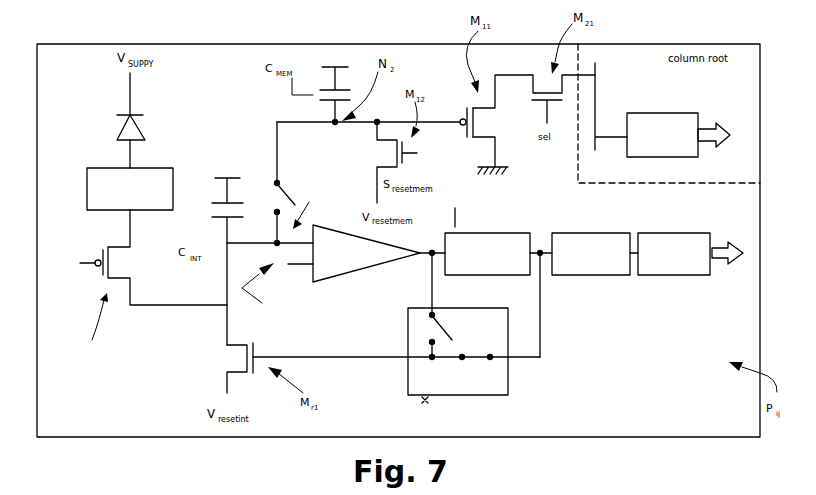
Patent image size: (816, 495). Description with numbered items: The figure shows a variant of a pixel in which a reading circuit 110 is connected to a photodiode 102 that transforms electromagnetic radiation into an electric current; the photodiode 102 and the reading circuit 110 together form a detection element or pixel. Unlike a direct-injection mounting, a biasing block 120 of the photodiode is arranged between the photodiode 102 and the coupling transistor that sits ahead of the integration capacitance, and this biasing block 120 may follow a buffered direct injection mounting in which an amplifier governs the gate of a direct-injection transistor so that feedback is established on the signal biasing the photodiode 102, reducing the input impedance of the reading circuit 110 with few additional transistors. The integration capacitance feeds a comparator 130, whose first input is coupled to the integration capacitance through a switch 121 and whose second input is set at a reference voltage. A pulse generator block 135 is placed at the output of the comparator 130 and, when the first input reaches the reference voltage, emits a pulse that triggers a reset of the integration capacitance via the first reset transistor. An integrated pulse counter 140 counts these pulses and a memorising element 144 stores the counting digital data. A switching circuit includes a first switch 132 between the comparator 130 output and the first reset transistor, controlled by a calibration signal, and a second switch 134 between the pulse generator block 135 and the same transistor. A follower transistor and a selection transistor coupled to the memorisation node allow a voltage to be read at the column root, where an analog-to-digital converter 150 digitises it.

The photodiode 102 is at (162, 124).
The biasing block 120 is at (178, 171).
The switch E1 121 is at (290, 182).
The reading circuit 110 is at (146, 352).
The comparator 130 is at (363, 270).
The first switch 132 is at (452, 334).
The second switch 134 is at (478, 362).
The pulse generator block 135 is at (518, 231).
The pulse counter 140 is at (583, 275).
The memorising element 144 is at (690, 276).
The analog-to-digital converter 150 is at (643, 112).